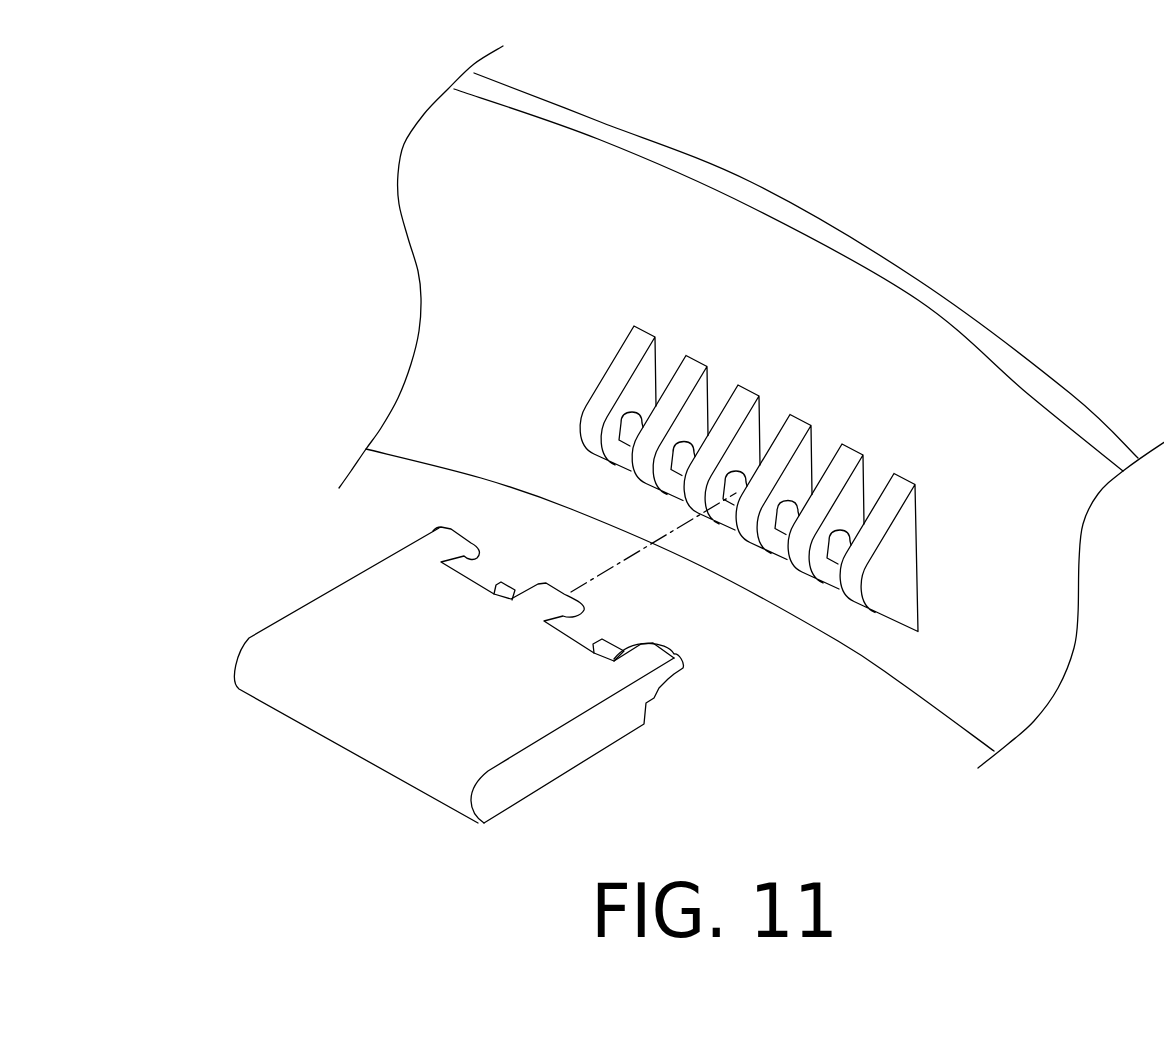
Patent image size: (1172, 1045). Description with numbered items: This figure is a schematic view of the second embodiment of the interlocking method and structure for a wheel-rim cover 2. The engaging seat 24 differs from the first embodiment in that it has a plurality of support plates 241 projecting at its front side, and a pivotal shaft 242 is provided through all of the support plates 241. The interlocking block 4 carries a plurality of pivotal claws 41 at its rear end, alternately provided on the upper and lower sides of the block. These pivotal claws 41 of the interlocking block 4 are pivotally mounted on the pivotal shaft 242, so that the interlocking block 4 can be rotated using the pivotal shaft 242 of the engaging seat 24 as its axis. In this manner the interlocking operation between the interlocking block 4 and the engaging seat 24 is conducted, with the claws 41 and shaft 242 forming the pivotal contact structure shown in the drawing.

The housing panel 2 is at (927, 293).
The engaging seat 24 is at (749, 409).
The support plate 241 is at (632, 328).
The pivotal shaft 242 is at (682, 352).
The interlocking block 4 is at (432, 659).
The pivotal claw 41 is at (452, 528).